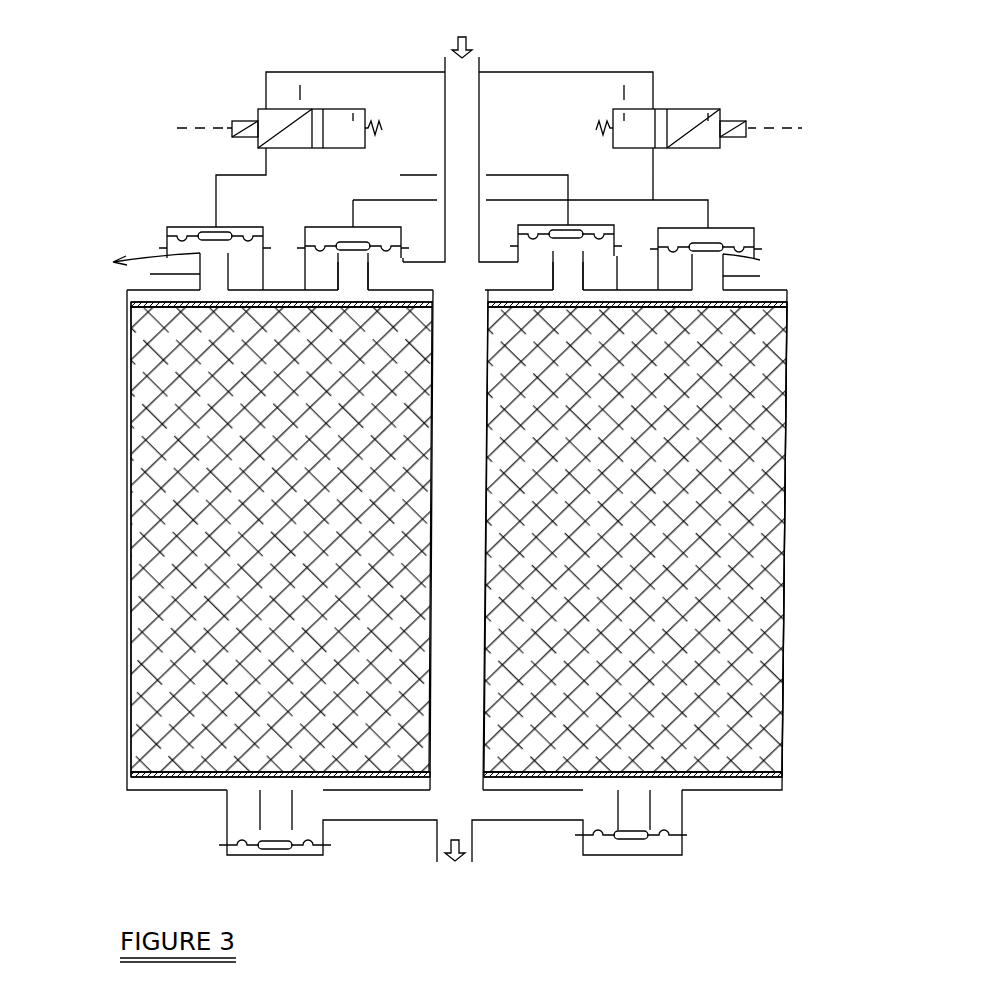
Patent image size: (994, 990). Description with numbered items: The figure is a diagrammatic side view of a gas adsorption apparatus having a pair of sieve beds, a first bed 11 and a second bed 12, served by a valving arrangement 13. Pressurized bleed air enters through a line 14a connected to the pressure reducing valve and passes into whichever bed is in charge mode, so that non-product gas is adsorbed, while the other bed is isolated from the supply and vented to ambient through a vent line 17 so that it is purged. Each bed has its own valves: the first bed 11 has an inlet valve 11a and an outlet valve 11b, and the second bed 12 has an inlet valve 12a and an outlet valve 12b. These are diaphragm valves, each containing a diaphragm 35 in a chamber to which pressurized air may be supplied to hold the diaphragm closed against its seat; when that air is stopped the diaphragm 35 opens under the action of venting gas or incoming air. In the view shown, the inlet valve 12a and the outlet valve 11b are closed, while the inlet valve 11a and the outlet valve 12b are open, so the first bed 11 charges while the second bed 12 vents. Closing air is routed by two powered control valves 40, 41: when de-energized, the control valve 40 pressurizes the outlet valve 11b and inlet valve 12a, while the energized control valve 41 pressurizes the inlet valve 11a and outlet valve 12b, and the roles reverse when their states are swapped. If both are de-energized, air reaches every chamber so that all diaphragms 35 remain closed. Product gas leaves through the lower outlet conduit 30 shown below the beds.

The first bed 11 is at (798, 725).
The second bed 12 is at (138, 727).
The inlet valve 11a is at (604, 296).
The inlet valve 12a is at (358, 294).
The outlet valve 11b is at (710, 278).
The outlet valve 12b is at (150, 275).
The valving arrangement 13 is at (779, 208).
The line 14a is at (473, 62).
The vent line 17 is at (128, 256).
The outlet conduit 30 is at (473, 840).
The diaphragm 35 is at (196, 236).
The control valve 40 is at (627, 109).
The control valve 41 is at (266, 109).